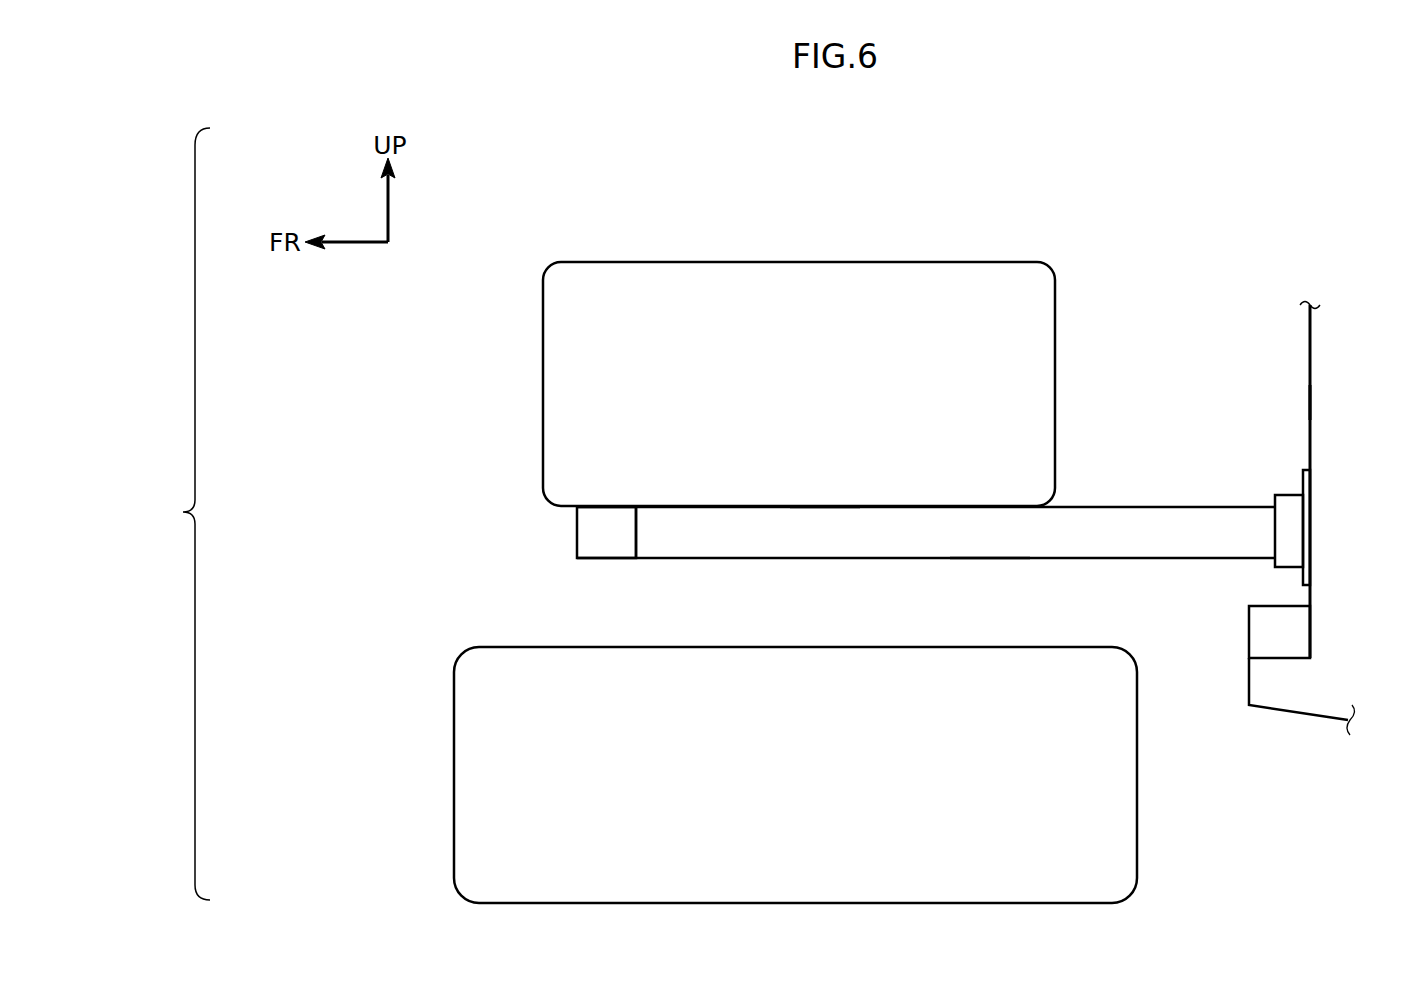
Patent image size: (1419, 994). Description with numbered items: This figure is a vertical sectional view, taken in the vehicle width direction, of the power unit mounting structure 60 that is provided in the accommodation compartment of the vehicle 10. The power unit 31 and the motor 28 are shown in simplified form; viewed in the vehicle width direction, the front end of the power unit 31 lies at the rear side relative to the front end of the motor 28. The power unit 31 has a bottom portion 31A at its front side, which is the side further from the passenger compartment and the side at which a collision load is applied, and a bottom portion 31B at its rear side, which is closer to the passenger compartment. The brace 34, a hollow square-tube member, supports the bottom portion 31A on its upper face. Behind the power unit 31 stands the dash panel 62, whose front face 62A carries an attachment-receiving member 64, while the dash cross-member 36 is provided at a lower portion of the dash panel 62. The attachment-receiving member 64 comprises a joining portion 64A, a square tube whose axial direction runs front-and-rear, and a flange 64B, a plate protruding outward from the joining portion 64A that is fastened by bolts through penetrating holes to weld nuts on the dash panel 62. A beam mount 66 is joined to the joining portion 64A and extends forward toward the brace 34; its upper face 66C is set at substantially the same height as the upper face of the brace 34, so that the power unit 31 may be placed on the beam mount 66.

The vehicle 10 is at (1292, 195).
The motor 28 is at (861, 645).
The power unit 31 is at (921, 260).
The bottom portion 31A is at (607, 508).
The bottom portion 31B is at (990, 508).
The brace 34 is at (575, 530).
The dash cross-member 36 is at (1246, 631).
The power unit mounting structure 60 is at (503, 496).
The dash panel 62 is at (1308, 359).
The front face 62A is at (1310, 403).
The attachment-receiving member 64 is at (1272, 494).
The joining portion 64A is at (1273, 500).
The flange 64B is at (1303, 470).
The beam mount 66 is at (1099, 503).
The upper face 66C is at (822, 507).